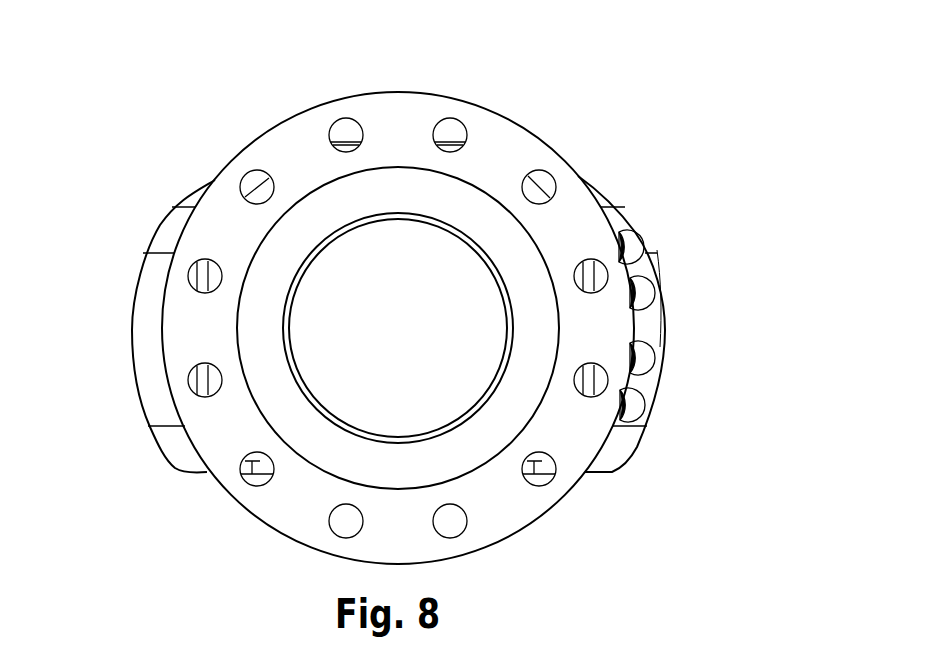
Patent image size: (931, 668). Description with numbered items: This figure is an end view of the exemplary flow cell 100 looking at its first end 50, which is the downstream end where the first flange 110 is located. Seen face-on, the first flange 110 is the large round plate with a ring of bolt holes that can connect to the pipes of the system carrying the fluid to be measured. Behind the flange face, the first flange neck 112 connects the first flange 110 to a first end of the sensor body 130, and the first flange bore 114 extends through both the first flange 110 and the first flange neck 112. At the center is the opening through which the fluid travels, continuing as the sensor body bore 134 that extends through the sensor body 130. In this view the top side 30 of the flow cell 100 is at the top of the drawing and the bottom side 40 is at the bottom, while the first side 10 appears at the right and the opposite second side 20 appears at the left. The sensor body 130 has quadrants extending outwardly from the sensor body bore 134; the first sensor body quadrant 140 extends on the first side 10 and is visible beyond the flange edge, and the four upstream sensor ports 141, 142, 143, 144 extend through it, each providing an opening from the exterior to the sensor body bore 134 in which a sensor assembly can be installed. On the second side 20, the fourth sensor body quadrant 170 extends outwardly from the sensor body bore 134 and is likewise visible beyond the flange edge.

The first side 10 is at (698, 324).
The second side 20 is at (107, 350).
The top side 30 is at (430, 75).
The bottom side 40 is at (424, 569).
The first end 50 is at (264, 509).
The flow cell 100 is at (494, 55).
The first flange 110 is at (387, 118).
The first flange neck 112 is at (448, 197).
The first flange bore 114 is at (357, 460).
The sensor body 130 is at (343, 233).
The sensor body bore 134 is at (340, 348).
The first sensor body quadrant 140 is at (600, 193).
The upstream sensor port 141 is at (632, 247).
The upstream sensor port 142 is at (640, 293).
The upstream sensor port 143 is at (640, 360).
The upstream sensor port 144 is at (633, 405).
The fourth sensor body quadrant 170 is at (190, 203).